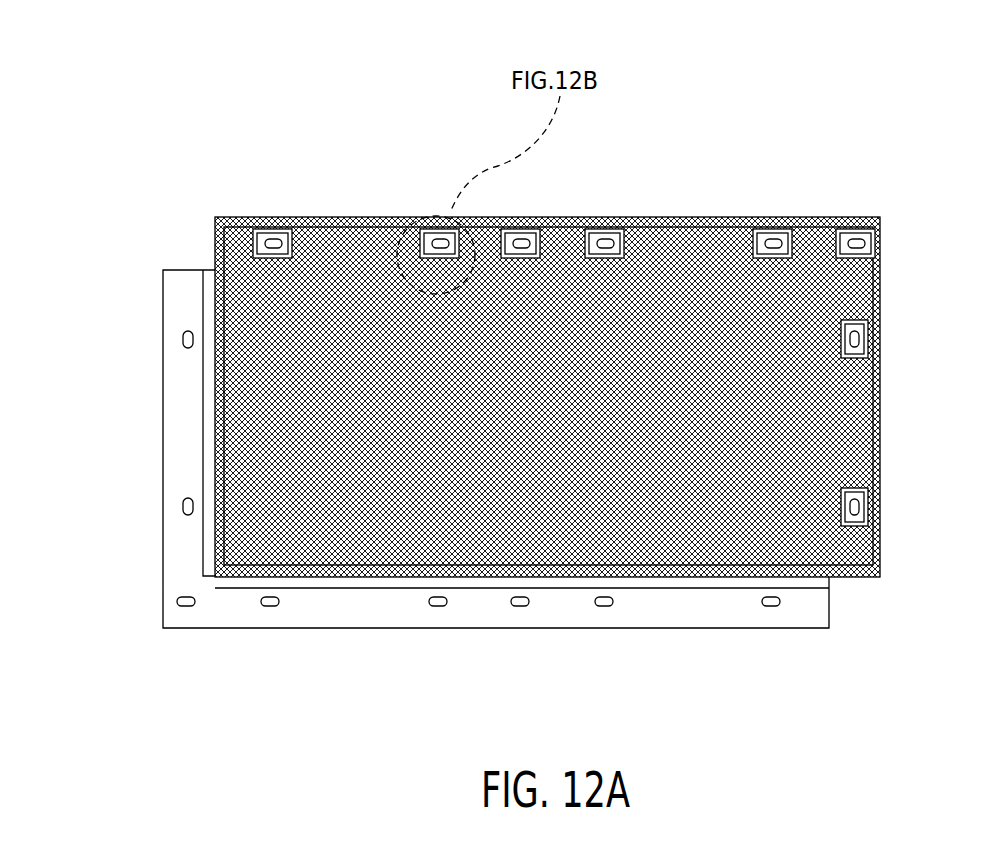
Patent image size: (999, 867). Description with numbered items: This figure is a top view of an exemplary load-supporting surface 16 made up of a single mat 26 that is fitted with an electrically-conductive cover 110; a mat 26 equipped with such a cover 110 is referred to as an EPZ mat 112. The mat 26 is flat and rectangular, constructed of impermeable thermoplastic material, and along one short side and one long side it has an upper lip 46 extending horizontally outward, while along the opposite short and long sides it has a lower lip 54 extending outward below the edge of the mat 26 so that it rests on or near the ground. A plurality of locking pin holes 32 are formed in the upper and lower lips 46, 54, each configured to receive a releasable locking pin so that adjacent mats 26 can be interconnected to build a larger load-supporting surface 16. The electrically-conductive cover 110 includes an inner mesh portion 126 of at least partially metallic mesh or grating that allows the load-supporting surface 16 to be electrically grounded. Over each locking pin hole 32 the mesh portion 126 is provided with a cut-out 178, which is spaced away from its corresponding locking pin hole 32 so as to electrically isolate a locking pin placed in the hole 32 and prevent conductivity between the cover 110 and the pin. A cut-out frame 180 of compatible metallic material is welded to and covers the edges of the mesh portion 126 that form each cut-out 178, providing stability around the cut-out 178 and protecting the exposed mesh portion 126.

The load-supporting surface 16 is at (273, 680).
The mat 26 is at (196, 648).
The locking pin holes 32 is at (268, 222).
The upper lip 46 is at (872, 362).
The lower lip 54 is at (720, 622).
The electrically-conductive cover 110 is at (222, 205).
The EPZ mat 112 is at (642, 147).
The mesh portion 126 is at (330, 222).
The cut-out 178 is at (422, 217).
The cut-out frame 180 is at (860, 488).